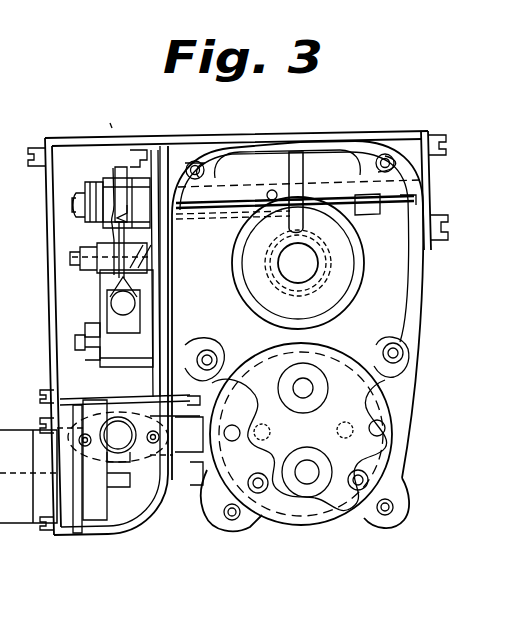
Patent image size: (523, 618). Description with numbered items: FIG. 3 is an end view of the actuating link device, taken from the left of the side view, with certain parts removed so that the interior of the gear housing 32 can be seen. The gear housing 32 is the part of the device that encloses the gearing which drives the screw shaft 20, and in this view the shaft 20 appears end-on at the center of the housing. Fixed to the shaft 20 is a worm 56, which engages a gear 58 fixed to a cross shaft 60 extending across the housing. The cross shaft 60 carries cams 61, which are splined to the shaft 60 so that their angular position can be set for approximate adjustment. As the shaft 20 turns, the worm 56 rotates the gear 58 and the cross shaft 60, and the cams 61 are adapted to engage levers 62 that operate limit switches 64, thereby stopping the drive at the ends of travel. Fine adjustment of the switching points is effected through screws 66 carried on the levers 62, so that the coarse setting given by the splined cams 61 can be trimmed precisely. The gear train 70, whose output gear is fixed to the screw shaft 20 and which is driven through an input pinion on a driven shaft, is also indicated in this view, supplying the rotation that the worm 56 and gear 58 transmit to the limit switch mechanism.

The shaft 20 is at (285, 271).
The gear housing 32 is at (316, 141).
The worm 56 is at (333, 264).
The gear 58 is at (296, 172).
The cross shaft 60 is at (358, 205).
The cams 61 is at (113, 168).
The levers 62 is at (110, 285).
The limit switches 64 is at (113, 370).
The screws 66 is at (112, 305).
The gear train 70 is at (354, 406).